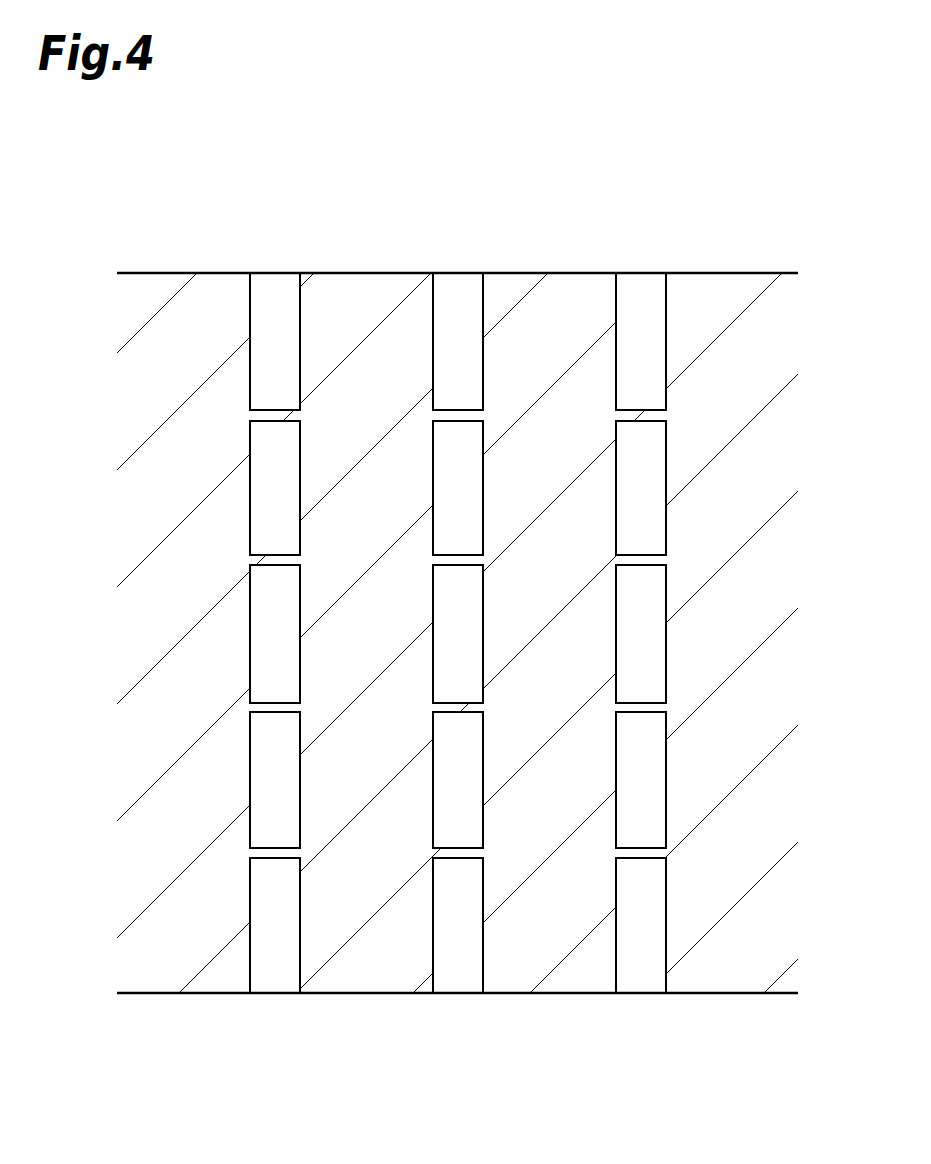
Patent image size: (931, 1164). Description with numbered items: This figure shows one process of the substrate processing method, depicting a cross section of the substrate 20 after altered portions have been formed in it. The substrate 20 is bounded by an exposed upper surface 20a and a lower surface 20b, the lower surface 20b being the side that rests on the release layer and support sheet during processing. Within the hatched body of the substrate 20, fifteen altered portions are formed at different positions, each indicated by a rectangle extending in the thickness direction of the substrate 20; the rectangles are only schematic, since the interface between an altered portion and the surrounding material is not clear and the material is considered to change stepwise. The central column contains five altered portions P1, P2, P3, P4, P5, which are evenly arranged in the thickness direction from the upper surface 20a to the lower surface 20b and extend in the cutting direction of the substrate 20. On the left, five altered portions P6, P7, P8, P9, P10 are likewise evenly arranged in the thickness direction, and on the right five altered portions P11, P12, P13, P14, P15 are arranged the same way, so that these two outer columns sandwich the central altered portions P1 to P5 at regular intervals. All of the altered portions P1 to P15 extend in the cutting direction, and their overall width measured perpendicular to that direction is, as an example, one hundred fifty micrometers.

The substrate 20 is at (777, 448).
The upper surface 20a is at (742, 273).
The lower surface 20b is at (733, 993).
The altered portion P1 is at (458, 341).
The altered portion P2 is at (458, 488).
The altered portion P3 is at (458, 634).
The altered portion P4 is at (458, 780).
The altered portion P5 is at (458, 925).
The altered portion P6 is at (275, 341).
The altered portion P7 is at (275, 488).
The altered portion P8 is at (275, 634).
The altered portion P9 is at (275, 780).
The altered portion P10 is at (275, 925).
The altered portion P11 is at (641, 341).
The altered portion P12 is at (641, 488).
The altered portion P13 is at (641, 634).
The altered portion P14 is at (641, 780).
The altered portion P15 is at (641, 925).